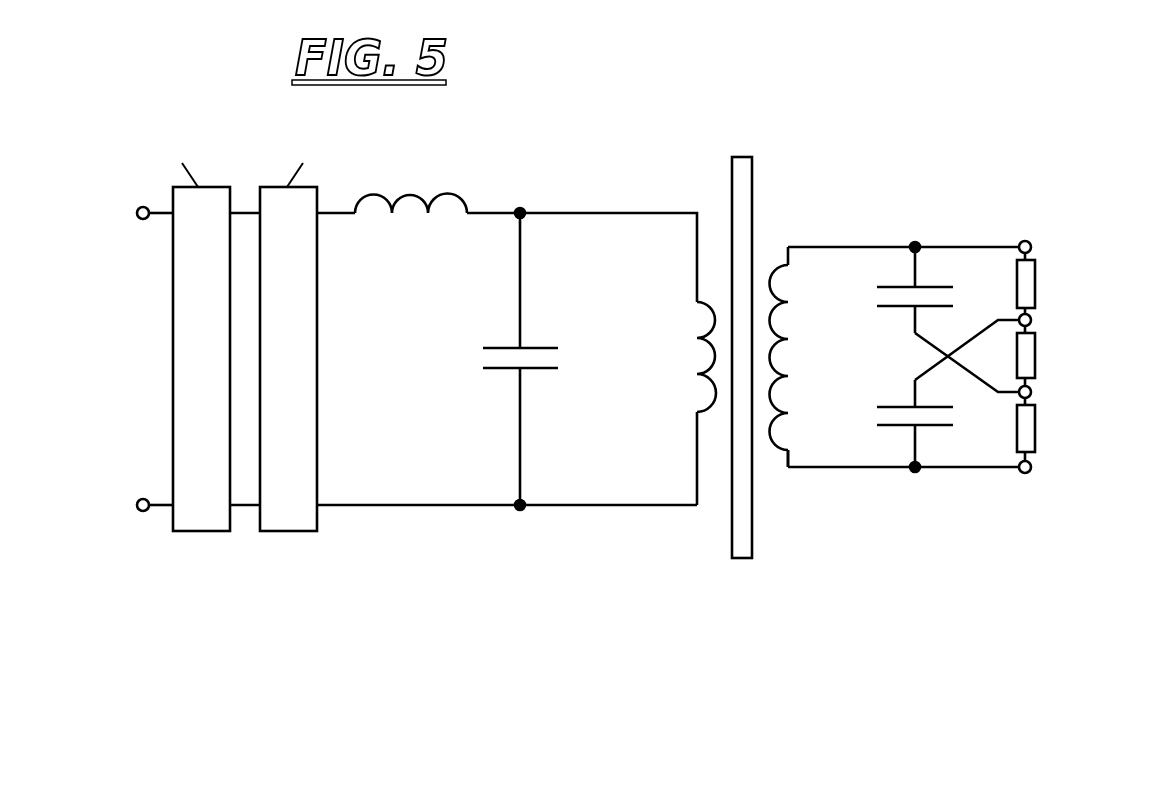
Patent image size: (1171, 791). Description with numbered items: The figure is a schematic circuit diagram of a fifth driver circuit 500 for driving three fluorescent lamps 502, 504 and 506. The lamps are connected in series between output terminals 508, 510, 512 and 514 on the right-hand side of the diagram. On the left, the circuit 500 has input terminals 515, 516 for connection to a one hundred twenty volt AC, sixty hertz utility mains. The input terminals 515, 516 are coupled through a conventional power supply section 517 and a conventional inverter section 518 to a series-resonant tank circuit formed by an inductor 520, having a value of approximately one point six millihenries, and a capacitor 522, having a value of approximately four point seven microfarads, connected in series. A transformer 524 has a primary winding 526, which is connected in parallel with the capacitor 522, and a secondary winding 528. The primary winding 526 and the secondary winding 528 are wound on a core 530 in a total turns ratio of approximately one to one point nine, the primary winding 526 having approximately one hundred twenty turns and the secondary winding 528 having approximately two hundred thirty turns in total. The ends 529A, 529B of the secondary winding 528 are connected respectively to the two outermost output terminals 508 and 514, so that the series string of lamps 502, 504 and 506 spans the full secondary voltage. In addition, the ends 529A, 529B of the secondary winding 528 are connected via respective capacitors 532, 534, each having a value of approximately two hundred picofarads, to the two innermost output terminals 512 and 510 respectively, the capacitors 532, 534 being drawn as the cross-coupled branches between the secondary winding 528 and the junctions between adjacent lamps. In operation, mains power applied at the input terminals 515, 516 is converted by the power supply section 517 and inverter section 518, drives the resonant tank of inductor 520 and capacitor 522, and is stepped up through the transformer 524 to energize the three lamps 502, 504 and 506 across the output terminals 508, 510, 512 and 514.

The fifth driver circuit 500 is at (329, 643).
The fluorescent lamp 502 is at (1037, 282).
The fluorescent lamp 504 is at (1037, 363).
The fluorescent lamp 506 is at (1037, 430).
The output terminal 508 is at (1030, 244).
The output terminal 510 is at (1030, 317).
The output terminal 512 is at (1030, 396).
The output terminal 514 is at (1030, 470).
The input terminal 515 is at (138, 222).
The input terminal 516 is at (138, 498).
The power supply section 517 is at (222, 362).
The inverter section 518 is at (310, 362).
The inductor 520 is at (393, 216).
The capacitor 522 is at (503, 370).
The transformer 524 is at (745, 599).
The primary winding 526 is at (700, 338).
The secondary winding 528 is at (775, 180).
The end of secondary winding 529A is at (789, 247).
The end of secondary winding 529B is at (788, 467).
The core 530 is at (745, 155).
The capacitor 532 is at (940, 287).
The capacitor 534 is at (932, 427).